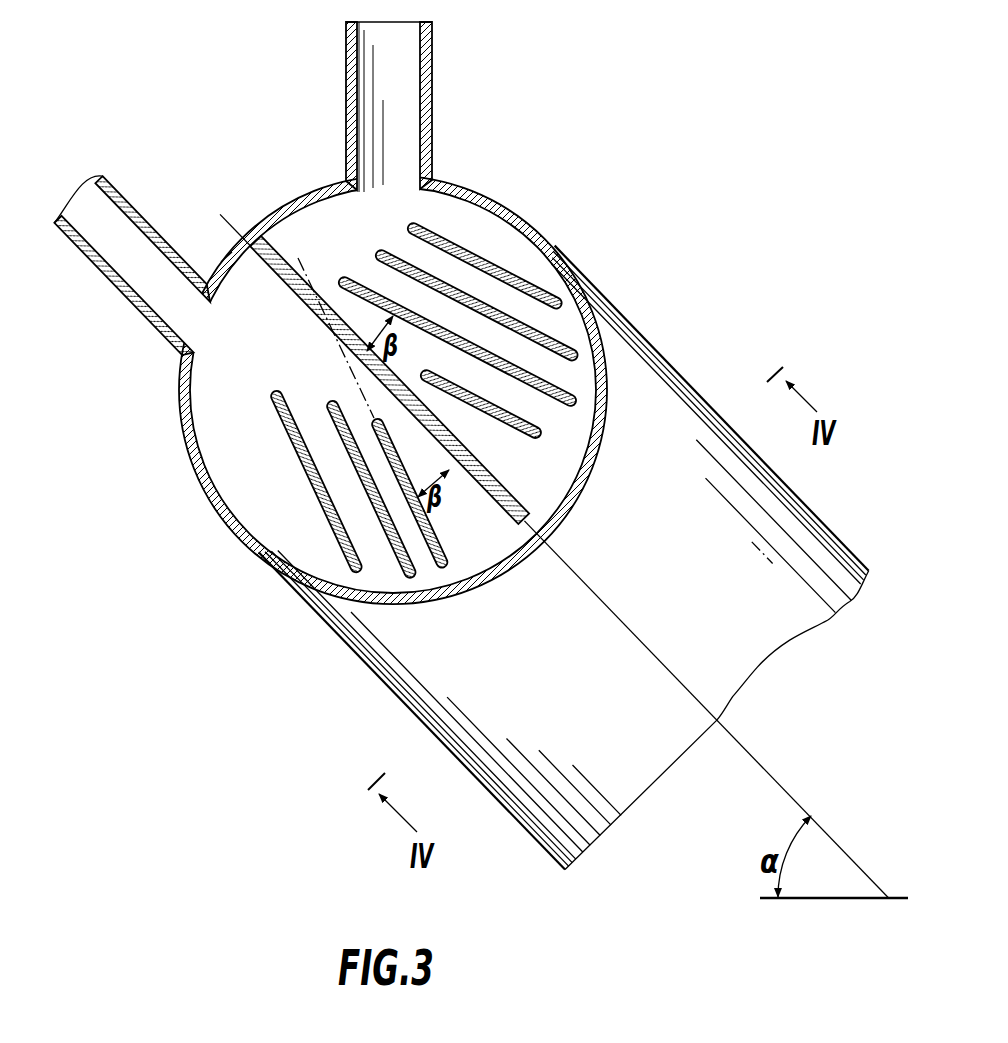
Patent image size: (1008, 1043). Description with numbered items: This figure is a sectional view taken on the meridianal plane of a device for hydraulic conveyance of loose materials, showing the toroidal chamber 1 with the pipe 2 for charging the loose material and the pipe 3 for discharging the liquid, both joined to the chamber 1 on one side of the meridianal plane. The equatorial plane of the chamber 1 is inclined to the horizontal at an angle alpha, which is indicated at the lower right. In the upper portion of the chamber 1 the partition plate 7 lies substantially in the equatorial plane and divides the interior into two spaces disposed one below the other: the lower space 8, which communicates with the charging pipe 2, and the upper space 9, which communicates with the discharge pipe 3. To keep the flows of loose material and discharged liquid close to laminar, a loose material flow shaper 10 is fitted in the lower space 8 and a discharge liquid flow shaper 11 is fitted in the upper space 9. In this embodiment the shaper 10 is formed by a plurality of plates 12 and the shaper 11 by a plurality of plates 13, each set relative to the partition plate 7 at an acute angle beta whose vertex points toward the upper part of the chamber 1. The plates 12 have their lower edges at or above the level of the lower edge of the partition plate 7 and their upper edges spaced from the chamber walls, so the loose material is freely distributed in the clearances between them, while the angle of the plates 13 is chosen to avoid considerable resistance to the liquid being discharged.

The toroidal chamber 1 is at (814, 519).
The pipe for charging the loose material 2 is at (113, 291).
The pipe for discharging the liquid 3 is at (433, 65).
The partition plate 7 is at (491, 480).
The lower space 8 is at (221, 265).
The upper space 9 is at (297, 232).
The loose material flow shaper 10 is at (300, 489).
The discharge liquid flow shaper 11 is at (370, 282).
The plates of the loose material flow shaper 12 is at (334, 527).
The plates of the discharge liquid flow shaper 13 is at (500, 268).